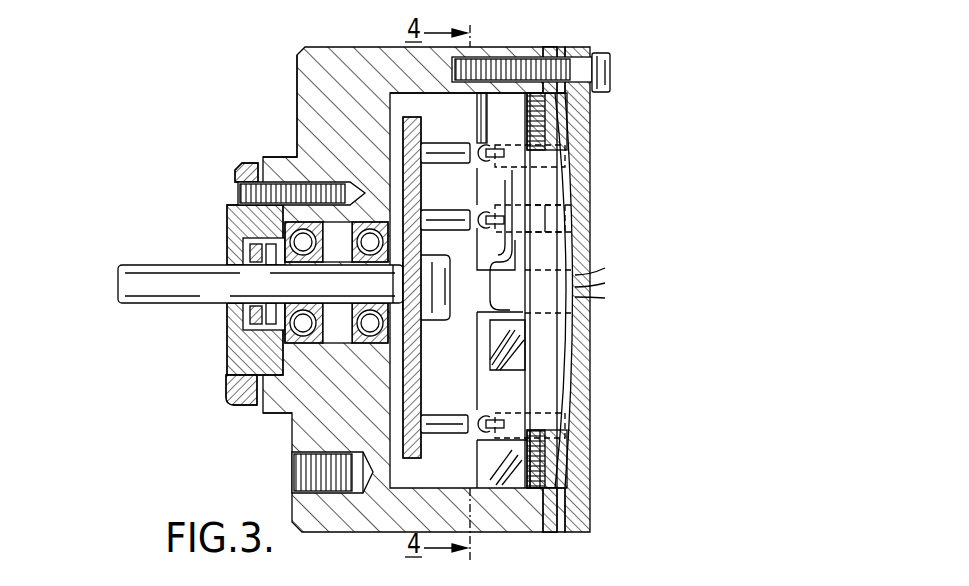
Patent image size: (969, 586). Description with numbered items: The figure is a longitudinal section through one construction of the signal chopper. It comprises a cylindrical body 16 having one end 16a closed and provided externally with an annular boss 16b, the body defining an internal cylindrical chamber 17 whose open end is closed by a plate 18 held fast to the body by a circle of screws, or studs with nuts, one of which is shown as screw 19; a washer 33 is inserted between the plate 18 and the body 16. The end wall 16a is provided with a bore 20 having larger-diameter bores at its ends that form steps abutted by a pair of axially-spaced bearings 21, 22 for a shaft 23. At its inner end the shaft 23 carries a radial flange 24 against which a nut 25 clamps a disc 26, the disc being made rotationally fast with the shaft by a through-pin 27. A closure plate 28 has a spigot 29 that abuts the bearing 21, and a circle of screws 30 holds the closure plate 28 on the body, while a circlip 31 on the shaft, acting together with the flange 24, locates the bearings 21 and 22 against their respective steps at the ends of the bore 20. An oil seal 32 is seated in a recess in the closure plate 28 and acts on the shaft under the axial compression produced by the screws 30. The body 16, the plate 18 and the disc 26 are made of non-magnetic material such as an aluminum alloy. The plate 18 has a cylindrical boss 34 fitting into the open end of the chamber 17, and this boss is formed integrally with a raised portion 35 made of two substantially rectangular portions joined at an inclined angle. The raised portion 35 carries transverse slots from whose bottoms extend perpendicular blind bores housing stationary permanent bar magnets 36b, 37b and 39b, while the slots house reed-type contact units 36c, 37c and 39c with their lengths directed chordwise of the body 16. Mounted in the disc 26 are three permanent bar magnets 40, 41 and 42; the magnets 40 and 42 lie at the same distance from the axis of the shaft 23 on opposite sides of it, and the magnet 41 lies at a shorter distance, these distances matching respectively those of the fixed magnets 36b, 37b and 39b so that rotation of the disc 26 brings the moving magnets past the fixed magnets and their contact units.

The cylindrical body 16 is at (348, 63).
The closed end 16a is at (297, 100).
The annular boss 16b is at (268, 414).
The internal cylindrical chamber 17 is at (423, 96).
The plate 18 is at (583, 430).
The screw 19 is at (600, 73).
The bore 20 is at (293, 423).
The bearing 21 is at (228, 231).
The bearing 22 is at (396, 322).
The shaft 23 is at (178, 284).
The radial flange 24 is at (415, 328).
The nut 25 is at (433, 298).
The disc 26 is at (400, 124).
The through-pin 27 is at (490, 240).
The closure plate 28 is at (238, 166).
The spigot 29 is at (245, 345).
The screws 30 is at (236, 191).
The circlip 31 is at (268, 272).
The oil seal 32 is at (230, 336).
The washer 33 is at (546, 57).
The cylindrical boss 34 is at (545, 460).
The raised portion 35 is at (510, 470).
The permanent bar magnet 36b is at (566, 158).
The reed-type contact unit 36c is at (490, 152).
The permanent bar magnet 37b is at (566, 228).
The reed-type contact unit 37c is at (490, 216).
The permanent bar magnet 39b is at (580, 452).
The reed-type contact unit 39c is at (490, 418).
The permanent bar magnet 40 is at (455, 148).
The permanent bar magnet 41 is at (460, 212).
The permanent bar magnet 42 is at (448, 417).